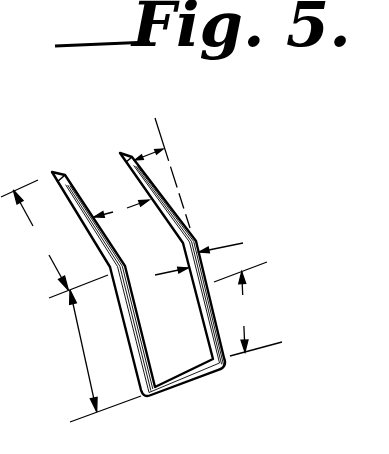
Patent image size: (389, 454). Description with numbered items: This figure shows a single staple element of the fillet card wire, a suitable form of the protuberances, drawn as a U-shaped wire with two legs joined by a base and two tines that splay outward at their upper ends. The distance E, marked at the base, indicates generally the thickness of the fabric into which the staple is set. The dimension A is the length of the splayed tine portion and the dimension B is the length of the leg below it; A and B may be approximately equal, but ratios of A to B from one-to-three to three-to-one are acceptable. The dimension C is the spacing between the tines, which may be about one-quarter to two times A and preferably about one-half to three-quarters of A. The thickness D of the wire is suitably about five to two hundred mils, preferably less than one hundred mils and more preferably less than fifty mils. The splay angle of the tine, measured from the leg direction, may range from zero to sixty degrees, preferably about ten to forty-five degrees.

The dimension A is at (54, 239).
The dimension B is at (93, 356).
The dimension C is at (121, 219).
The thickness D is at (211, 248).
The distance E is at (248, 309).